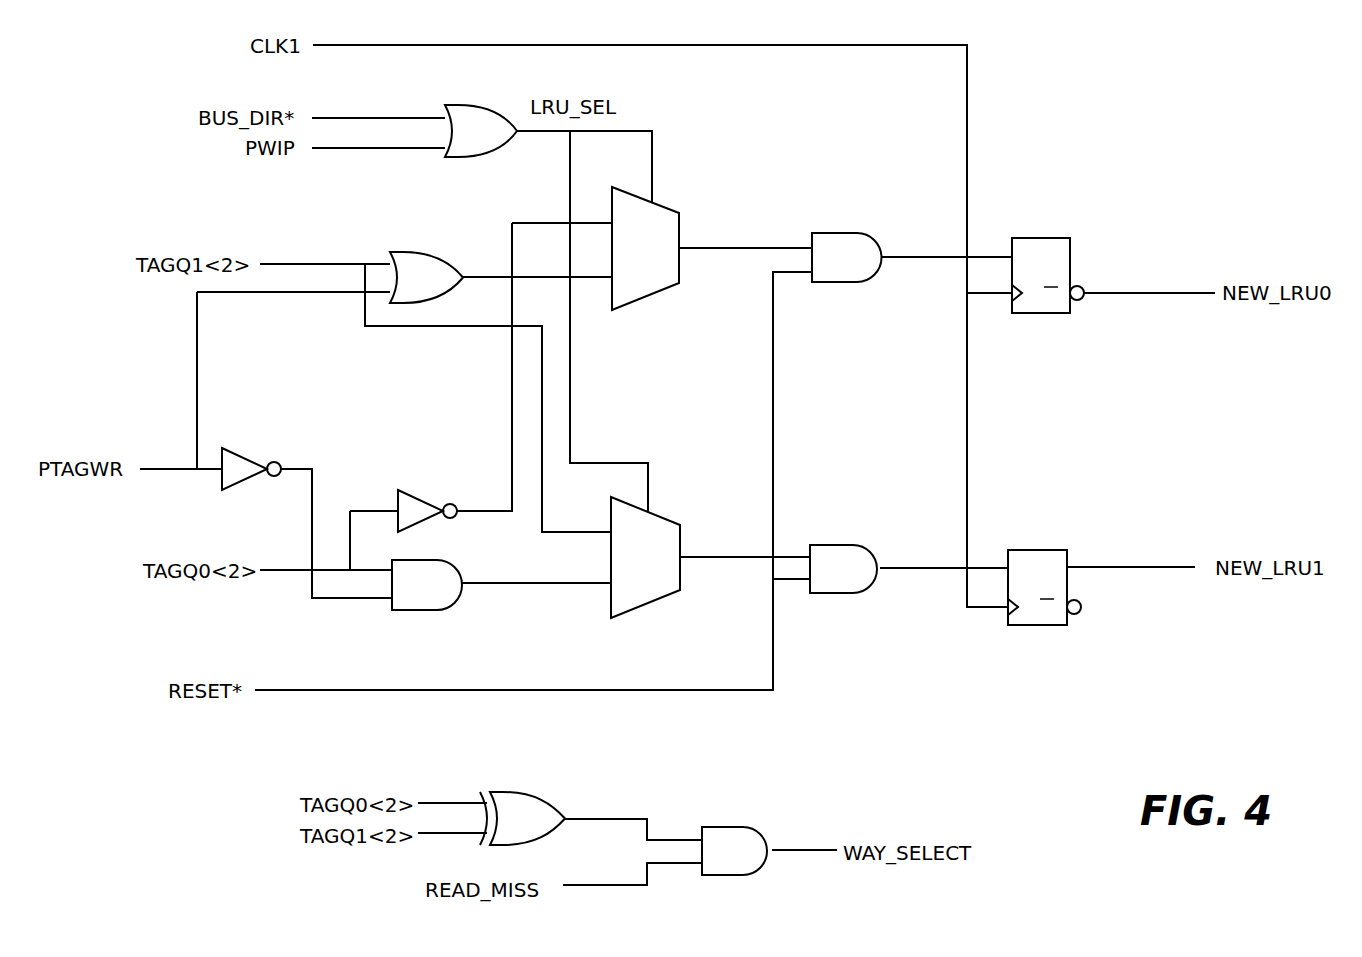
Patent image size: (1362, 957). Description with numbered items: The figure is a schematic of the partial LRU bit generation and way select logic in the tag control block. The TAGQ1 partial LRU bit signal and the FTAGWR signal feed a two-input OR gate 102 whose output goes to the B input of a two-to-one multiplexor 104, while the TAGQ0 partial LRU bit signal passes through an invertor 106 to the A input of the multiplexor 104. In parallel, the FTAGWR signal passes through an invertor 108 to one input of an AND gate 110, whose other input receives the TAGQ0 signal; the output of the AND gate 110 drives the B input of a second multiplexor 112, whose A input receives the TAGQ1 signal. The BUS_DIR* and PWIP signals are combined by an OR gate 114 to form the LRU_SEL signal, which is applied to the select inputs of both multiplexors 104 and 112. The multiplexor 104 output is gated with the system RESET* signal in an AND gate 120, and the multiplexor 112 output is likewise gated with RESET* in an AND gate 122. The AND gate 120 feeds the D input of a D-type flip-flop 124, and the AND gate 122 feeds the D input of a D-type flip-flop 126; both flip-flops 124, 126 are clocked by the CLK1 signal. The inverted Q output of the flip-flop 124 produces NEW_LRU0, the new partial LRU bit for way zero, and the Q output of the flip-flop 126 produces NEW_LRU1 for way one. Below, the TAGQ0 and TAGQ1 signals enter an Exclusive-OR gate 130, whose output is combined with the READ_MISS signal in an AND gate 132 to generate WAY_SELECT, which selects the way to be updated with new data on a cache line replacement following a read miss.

The OR gate 102 is at (423, 250).
The multiplexor 104 is at (657, 293).
The invertor 106 is at (425, 497).
The invertor 108 is at (247, 452).
The AND gate 110 is at (450, 610).
The multiplexor 112 is at (637, 613).
The OR gate 114 is at (488, 160).
The AND gate 120 is at (867, 283).
The AND gate 122 is at (860, 595).
The D-type flip-flop 124 is at (1028, 315).
The D-type flip-flop 126 is at (1035, 627).
The Exclusive-OR gate 130 is at (542, 795).
The AND gate 132 is at (737, 826).